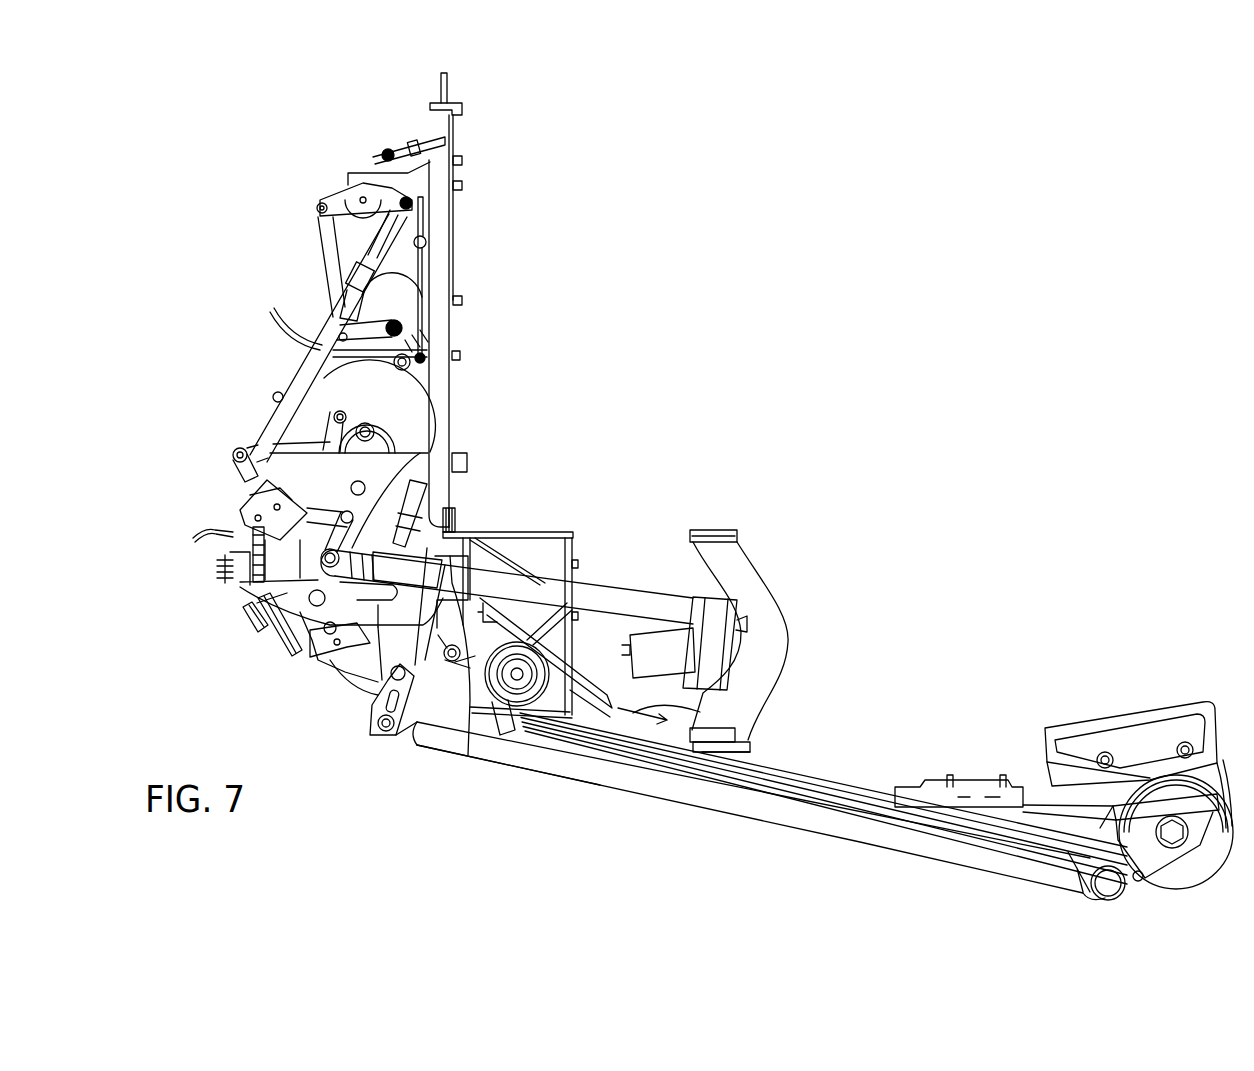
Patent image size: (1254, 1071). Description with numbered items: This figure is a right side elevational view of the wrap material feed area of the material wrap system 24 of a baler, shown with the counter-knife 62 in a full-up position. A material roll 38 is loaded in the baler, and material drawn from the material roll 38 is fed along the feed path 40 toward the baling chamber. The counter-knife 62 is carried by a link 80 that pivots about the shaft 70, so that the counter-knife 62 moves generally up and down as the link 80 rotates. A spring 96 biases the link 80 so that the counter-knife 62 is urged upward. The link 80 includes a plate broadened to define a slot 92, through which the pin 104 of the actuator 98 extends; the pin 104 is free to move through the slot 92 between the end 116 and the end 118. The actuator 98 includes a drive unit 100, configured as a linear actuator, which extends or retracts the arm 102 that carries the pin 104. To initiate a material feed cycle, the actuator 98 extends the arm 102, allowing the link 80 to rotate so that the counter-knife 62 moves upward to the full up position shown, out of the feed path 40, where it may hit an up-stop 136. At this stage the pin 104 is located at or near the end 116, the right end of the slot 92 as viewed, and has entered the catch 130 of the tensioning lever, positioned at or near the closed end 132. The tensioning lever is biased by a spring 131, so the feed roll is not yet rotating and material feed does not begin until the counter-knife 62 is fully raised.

The material wrap system 24 is at (654, 422).
The material roll 38 is at (403, 405).
The feed path 40 is at (733, 713).
The counter-knife 62 is at (407, 735).
The shaft 70 is at (250, 625).
The link 80 is at (373, 680).
The slot 92 is at (228, 544).
The spring 96 is at (233, 455).
The actuator 98 is at (650, 550).
The drive unit 100 is at (712, 647).
The arm 102 is at (460, 722).
The pin 104 is at (408, 500).
The end 116 is at (310, 660).
The end 118 is at (253, 587).
The catch 130 is at (388, 474).
The spring 131 is at (258, 555).
The closed end 132 is at (445, 528).
The up-stop 136 is at (477, 530).